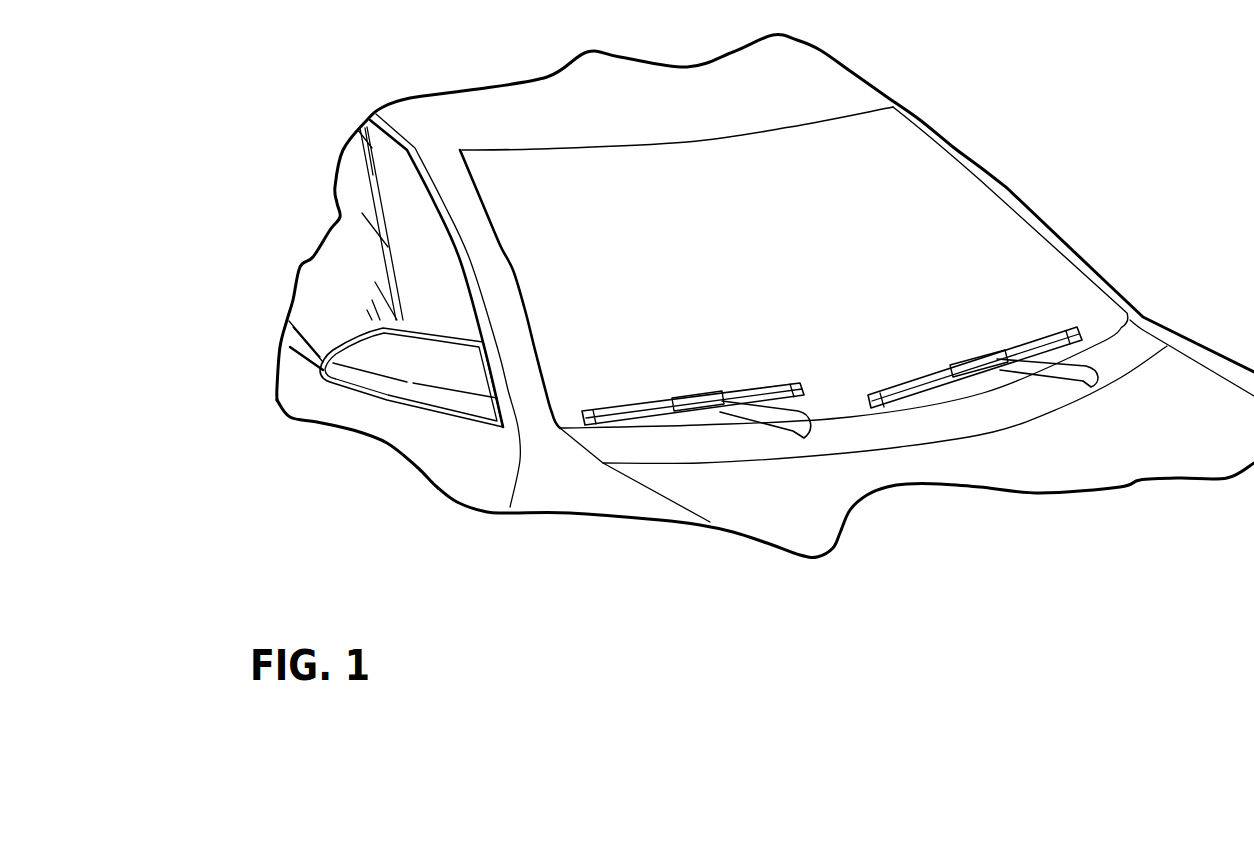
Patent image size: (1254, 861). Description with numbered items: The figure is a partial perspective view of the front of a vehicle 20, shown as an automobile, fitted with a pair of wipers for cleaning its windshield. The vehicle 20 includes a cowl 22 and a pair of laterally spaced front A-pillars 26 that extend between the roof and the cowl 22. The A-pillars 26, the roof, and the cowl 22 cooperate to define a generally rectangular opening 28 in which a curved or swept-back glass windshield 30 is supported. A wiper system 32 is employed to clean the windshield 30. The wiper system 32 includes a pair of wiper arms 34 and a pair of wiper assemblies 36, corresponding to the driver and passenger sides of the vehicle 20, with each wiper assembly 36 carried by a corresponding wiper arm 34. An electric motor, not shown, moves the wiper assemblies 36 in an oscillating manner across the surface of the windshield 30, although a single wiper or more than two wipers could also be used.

The vehicle 20 is at (259, 194).
The cowl 22 is at (1143, 353).
The front A-pillars 26 is at (1040, 229).
The opening 28 is at (957, 163).
The windshield 30 is at (690, 225).
The wiper system 32 is at (899, 466).
The wiper arms 34 is at (783, 440).
The wiper assemblies 36 is at (615, 400).